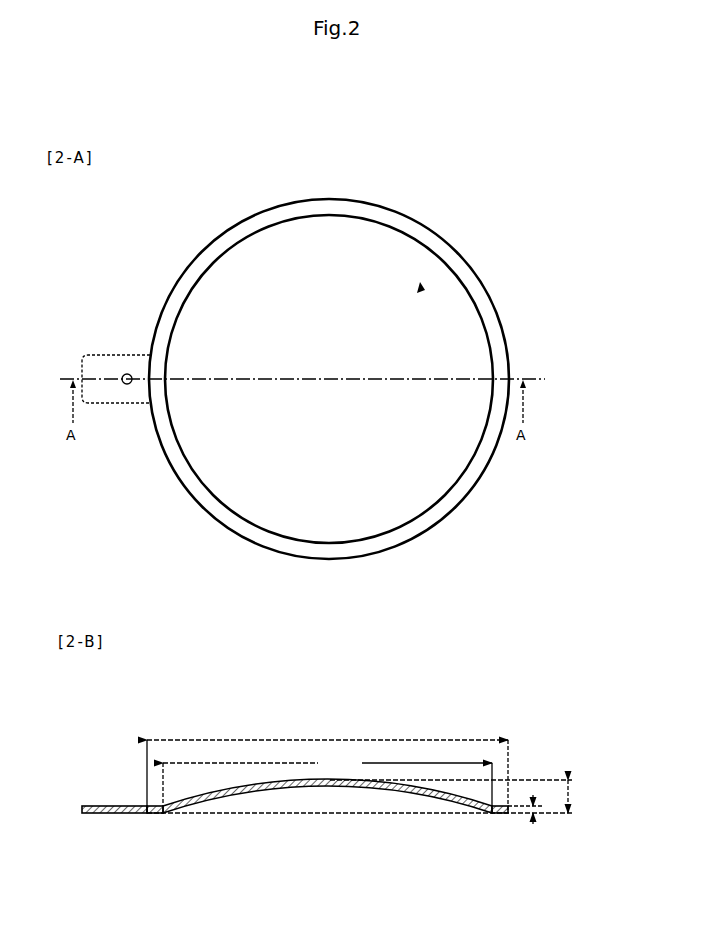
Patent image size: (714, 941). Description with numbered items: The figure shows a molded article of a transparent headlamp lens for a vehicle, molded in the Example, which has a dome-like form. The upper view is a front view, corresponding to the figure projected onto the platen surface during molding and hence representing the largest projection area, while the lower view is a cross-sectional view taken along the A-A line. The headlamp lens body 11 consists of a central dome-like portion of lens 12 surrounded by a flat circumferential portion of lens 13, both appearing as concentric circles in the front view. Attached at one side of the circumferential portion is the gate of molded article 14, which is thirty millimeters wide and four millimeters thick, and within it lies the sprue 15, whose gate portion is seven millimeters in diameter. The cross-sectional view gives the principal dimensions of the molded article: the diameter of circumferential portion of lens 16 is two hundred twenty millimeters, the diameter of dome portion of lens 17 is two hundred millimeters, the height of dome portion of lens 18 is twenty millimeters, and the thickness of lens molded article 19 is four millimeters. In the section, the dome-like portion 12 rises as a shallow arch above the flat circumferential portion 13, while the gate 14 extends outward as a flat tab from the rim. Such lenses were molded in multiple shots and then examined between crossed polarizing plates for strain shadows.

The headlamp lens body 11 is at (421, 292).
The dome-like portion of lens 12 is at (445, 305).
The circumferential portion of lens 13 is at (490, 370).
The gate of molded article 14 is at (93, 367).
The sprue 15 is at (127, 374).
The diameter of circumferential portion of lens 16 is at (327, 731).
The diameter of dome portion of lens 17 is at (327, 755).
The height of dome portion of lens 18 is at (592, 796).
The thickness of lens molded article 19 is at (539, 824).